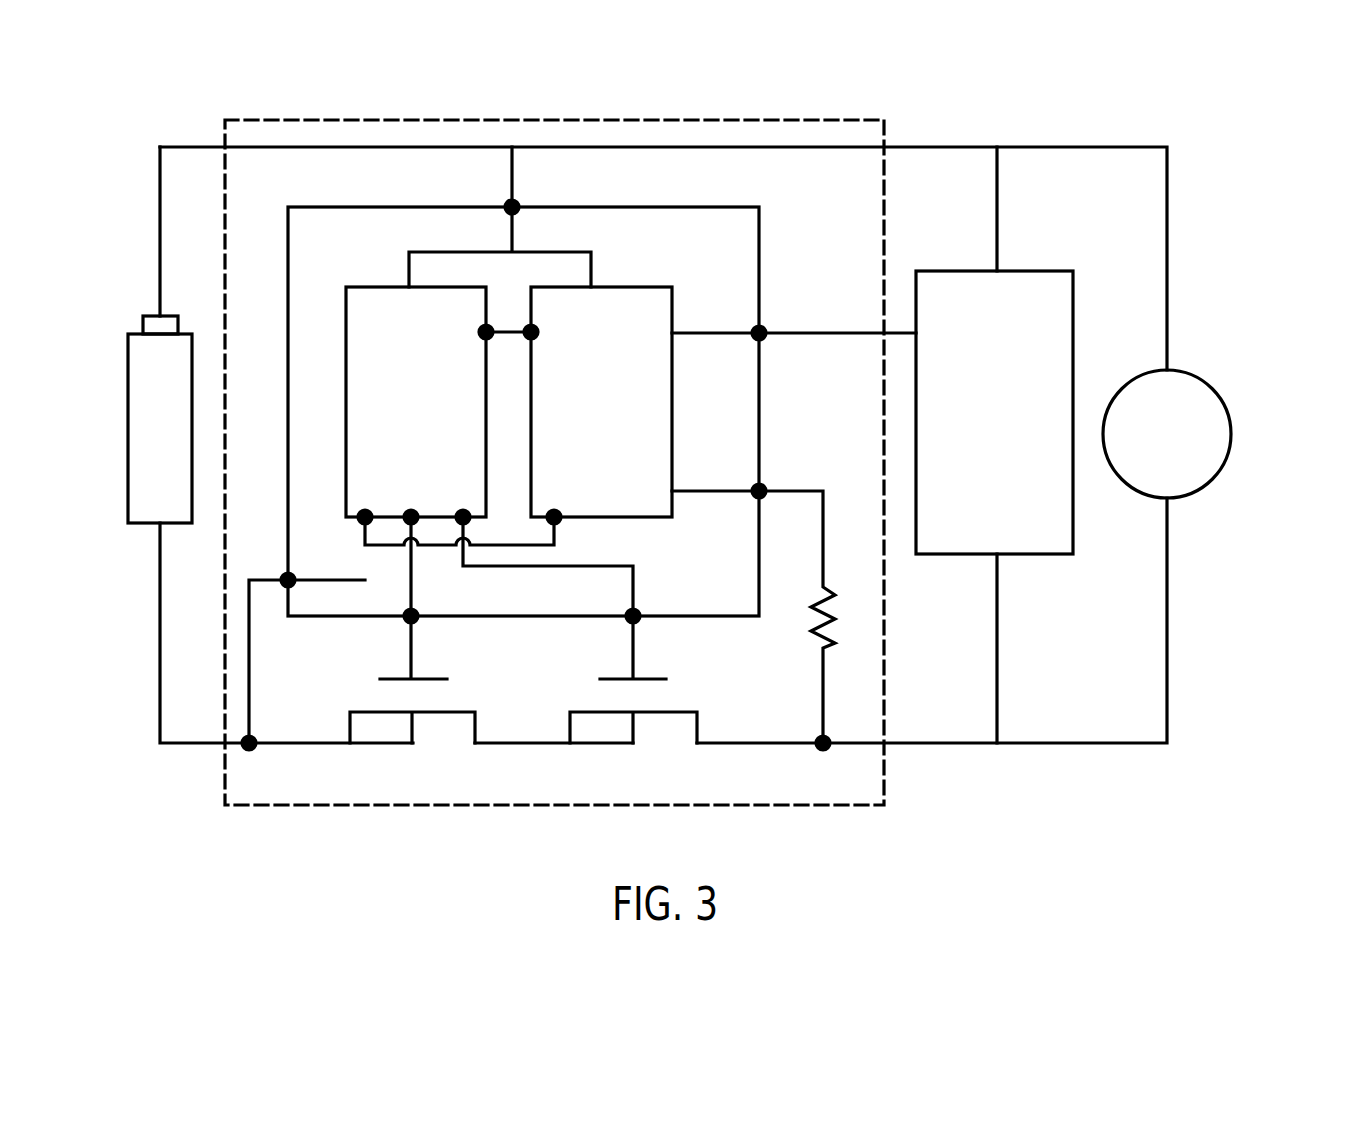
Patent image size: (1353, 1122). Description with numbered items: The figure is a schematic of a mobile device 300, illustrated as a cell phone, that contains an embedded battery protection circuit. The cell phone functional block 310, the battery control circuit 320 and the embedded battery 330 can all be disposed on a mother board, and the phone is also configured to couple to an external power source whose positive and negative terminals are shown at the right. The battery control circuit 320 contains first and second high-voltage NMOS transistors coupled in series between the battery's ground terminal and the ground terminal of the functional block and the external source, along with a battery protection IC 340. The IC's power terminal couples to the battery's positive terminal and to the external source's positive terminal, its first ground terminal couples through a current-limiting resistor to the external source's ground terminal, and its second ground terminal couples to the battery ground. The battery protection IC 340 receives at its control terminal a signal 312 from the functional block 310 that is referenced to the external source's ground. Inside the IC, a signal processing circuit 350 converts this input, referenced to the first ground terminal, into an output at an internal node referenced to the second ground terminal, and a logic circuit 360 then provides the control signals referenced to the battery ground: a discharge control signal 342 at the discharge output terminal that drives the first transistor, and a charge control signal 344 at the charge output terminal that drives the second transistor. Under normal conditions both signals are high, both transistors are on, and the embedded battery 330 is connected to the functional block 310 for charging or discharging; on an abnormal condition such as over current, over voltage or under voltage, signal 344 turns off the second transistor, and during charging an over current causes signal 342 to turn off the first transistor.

The mobile device 300 is at (1140, 80).
The cell phone functional block 310 is at (994, 445).
The signal 312 is at (790, 333).
The battery control circuit 320 is at (625, 115).
The embedded battery 330 is at (156, 358).
The battery protection IC 340 is at (538, 470).
The discharge control signal 342 is at (415, 606).
The charge control signal 344 is at (637, 600).
The signal processing circuit 350 is at (601, 402).
The logic circuit 360 is at (416, 402).